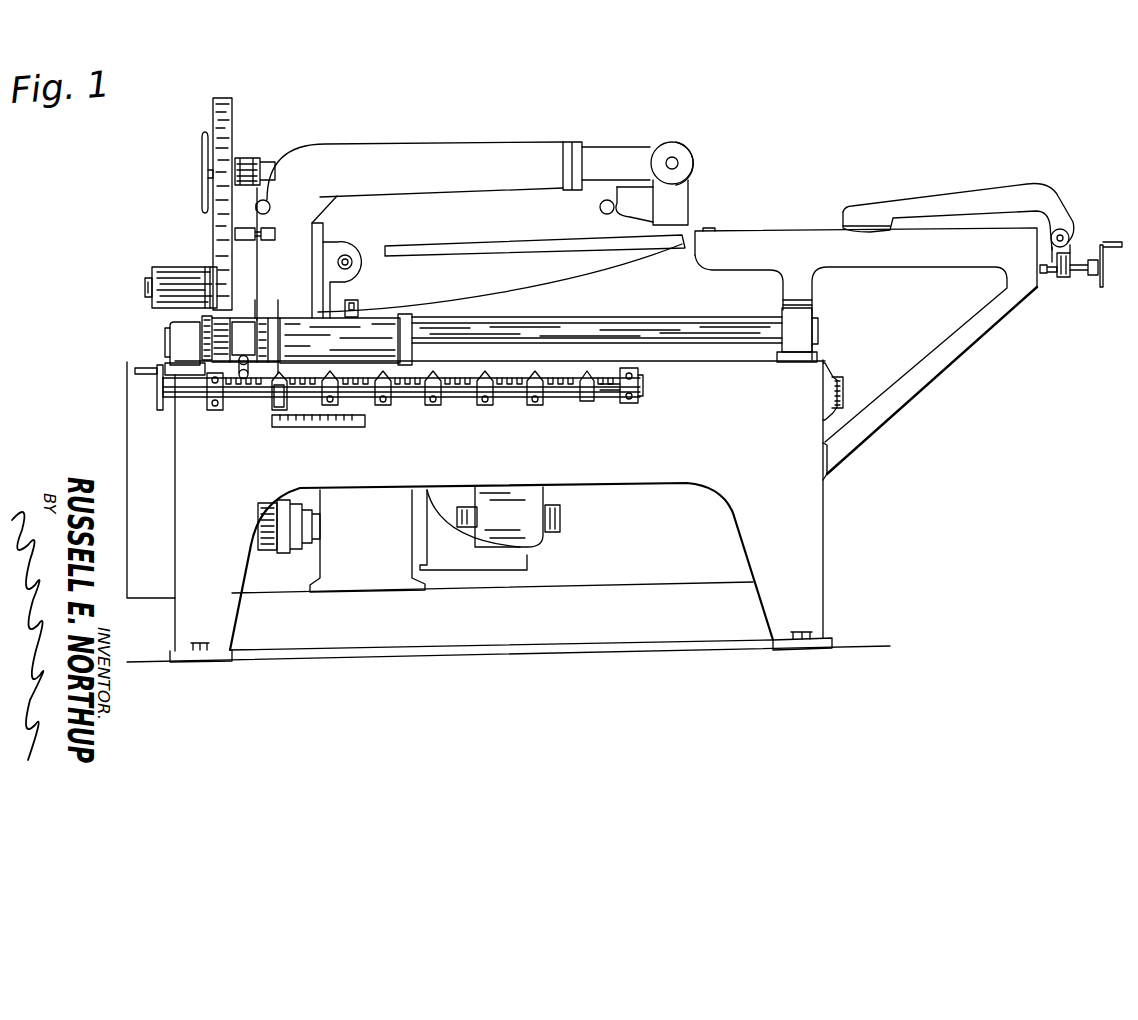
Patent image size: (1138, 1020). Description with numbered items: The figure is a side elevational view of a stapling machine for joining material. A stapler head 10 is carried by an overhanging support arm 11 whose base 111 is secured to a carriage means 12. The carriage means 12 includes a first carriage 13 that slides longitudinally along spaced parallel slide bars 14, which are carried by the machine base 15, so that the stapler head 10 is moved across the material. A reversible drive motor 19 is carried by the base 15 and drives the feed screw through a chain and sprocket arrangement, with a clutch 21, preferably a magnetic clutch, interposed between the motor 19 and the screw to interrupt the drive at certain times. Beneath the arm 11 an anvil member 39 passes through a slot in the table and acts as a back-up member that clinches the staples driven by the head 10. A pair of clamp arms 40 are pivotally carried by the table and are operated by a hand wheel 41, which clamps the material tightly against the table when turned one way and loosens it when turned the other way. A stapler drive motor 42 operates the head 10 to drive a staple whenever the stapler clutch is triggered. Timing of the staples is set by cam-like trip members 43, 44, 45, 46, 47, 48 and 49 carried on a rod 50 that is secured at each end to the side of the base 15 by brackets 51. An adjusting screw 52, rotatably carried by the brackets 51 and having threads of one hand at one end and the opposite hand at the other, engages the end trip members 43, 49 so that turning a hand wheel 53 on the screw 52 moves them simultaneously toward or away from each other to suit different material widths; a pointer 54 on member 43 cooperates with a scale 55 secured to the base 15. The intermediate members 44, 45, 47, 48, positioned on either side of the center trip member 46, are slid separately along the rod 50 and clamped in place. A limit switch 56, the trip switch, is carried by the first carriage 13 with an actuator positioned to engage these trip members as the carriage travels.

The stapler head 10 is at (698, 138).
The overhanging support arm 11 is at (470, 138).
The carriage means 12 is at (366, 303).
The first carriage 13 is at (380, 330).
The slide bars 14 is at (580, 325).
The base 15 is at (830, 530).
The reversible drive motor 19 is at (496, 520).
The clutch 21 is at (268, 530).
The anvil member 39 is at (484, 242).
The clamp arms 40 is at (905, 198).
The hand wheel 41 is at (1100, 280).
The stapler drive motor 42 is at (168, 278).
The trip member 43 is at (272, 320).
The trip member 44 is at (328, 388).
The trip member 45 is at (388, 397).
The center trip member 46 is at (436, 397).
The trip member 47 is at (486, 394).
The trip member 48 is at (536, 394).
The trip member 49 is at (586, 397).
The rod 50 is at (610, 397).
The brackets 51 is at (213, 400).
The adjusting screw 52 is at (243, 387).
The hand wheel 53 is at (160, 398).
The pointer 54 is at (277, 402).
The scale 55 is at (310, 421).
The limit switch 56 is at (245, 338).
The base 111 is at (320, 260).